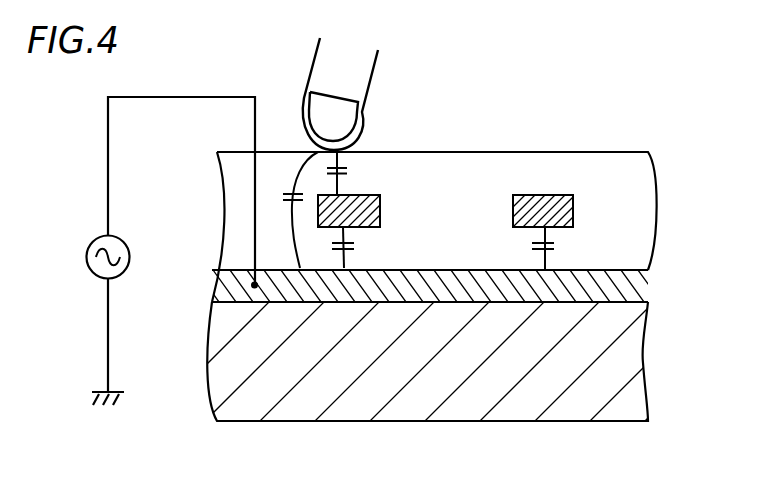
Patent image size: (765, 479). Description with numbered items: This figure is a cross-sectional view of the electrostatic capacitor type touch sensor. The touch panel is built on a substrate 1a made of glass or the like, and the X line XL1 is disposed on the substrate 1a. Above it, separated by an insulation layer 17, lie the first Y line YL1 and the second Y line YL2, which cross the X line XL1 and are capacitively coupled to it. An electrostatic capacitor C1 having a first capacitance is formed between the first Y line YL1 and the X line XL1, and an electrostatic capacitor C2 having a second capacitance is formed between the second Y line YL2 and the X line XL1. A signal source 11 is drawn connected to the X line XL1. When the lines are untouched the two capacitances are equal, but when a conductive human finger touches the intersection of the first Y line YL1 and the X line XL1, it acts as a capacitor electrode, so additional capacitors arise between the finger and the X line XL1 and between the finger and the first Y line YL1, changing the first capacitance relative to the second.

The AC power source 11 is at (135, 261).
The insulation layer 17 is at (648, 218).
The X line XL1 is at (647, 288).
The substrate 1a is at (635, 357).
The first Y line YL1 is at (377, 195).
The second Y line YL2 is at (555, 195).
The electrostatic capacitor C1 is at (360, 247).
The electrostatic capacitor C2 is at (559, 248).